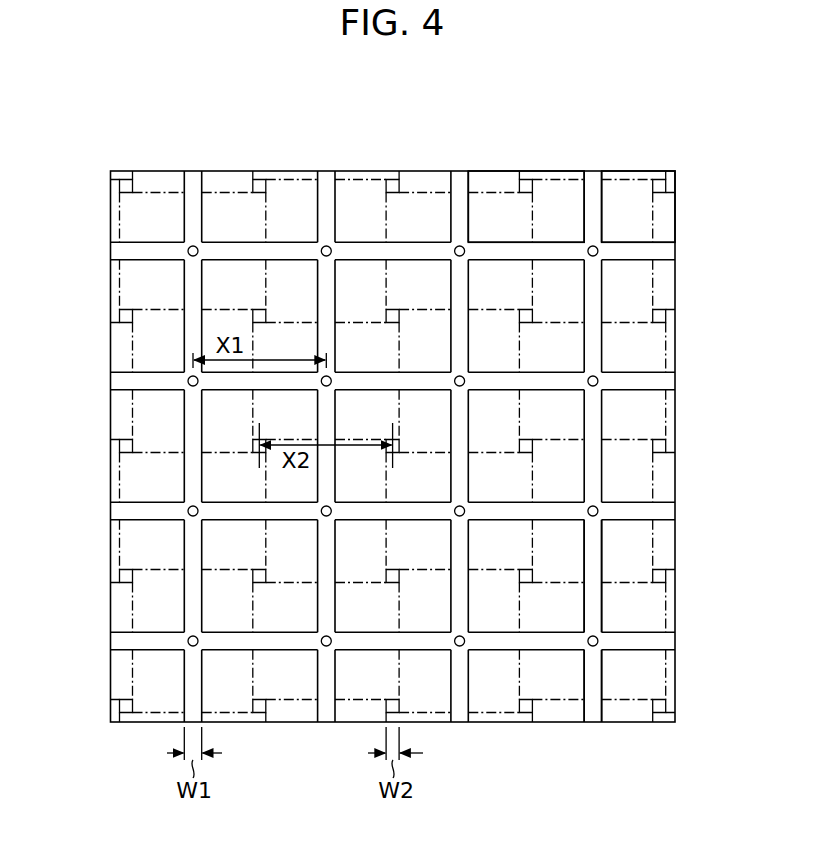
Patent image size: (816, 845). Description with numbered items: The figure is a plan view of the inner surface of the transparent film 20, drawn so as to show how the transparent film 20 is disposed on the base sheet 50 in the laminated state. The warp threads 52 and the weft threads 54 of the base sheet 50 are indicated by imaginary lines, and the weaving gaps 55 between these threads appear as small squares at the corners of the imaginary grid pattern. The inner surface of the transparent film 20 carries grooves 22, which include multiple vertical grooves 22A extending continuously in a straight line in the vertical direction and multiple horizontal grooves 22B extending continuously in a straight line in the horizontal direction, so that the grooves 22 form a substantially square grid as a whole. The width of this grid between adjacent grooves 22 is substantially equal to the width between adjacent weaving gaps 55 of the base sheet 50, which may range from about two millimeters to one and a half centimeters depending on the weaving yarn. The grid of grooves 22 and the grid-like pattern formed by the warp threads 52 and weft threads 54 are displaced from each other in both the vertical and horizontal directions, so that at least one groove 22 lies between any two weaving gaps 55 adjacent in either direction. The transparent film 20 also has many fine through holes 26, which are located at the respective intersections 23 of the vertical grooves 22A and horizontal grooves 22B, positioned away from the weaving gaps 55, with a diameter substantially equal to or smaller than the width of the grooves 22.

The transparent film 20 is at (428, 169).
The grooves 22 is at (596, 345).
The vertical grooves 22A is at (190, 210).
The horizontal grooves 22B is at (145, 252).
The intersections 23 is at (596, 503).
The through holes 26 is at (596, 388).
The base sheet 50 is at (571, 155).
The warp threads 52 is at (628, 207).
The weft threads 54 is at (498, 207).
The weaving gaps 55 is at (258, 714).